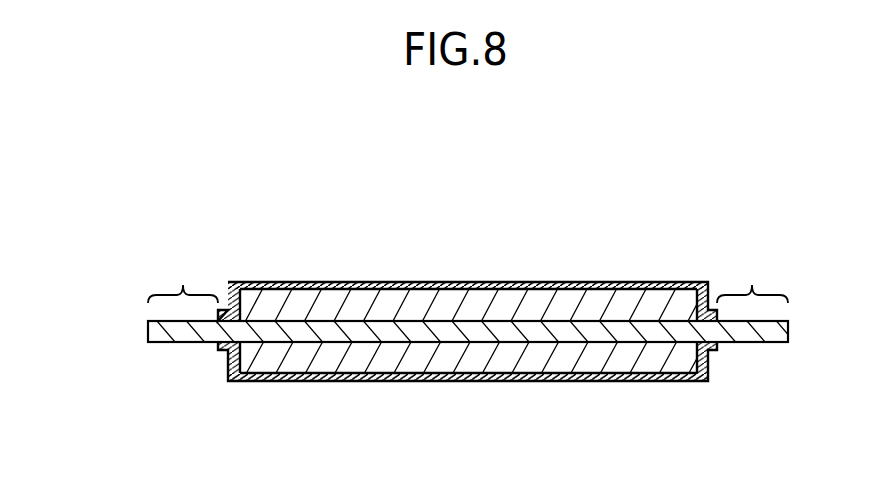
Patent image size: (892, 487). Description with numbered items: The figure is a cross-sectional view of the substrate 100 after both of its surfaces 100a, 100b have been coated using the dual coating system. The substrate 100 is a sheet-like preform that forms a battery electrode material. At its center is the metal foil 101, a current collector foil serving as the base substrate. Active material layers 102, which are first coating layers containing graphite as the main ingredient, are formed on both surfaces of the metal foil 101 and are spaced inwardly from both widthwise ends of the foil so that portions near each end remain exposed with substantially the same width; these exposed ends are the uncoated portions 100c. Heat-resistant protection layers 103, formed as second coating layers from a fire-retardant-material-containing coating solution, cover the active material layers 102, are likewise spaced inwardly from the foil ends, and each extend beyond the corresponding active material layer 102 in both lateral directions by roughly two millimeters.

The substrate 100 is at (429, 287).
The first surface of the substrate 100a is at (350, 282).
The second surface of the substrate 100b is at (547, 381).
The uncoated portion 100c is at (468, 272).
The metal foil 101 is at (157, 332).
The active material layer 102 is at (483, 300).
The heat-resistant protection layer 103 is at (579, 289).